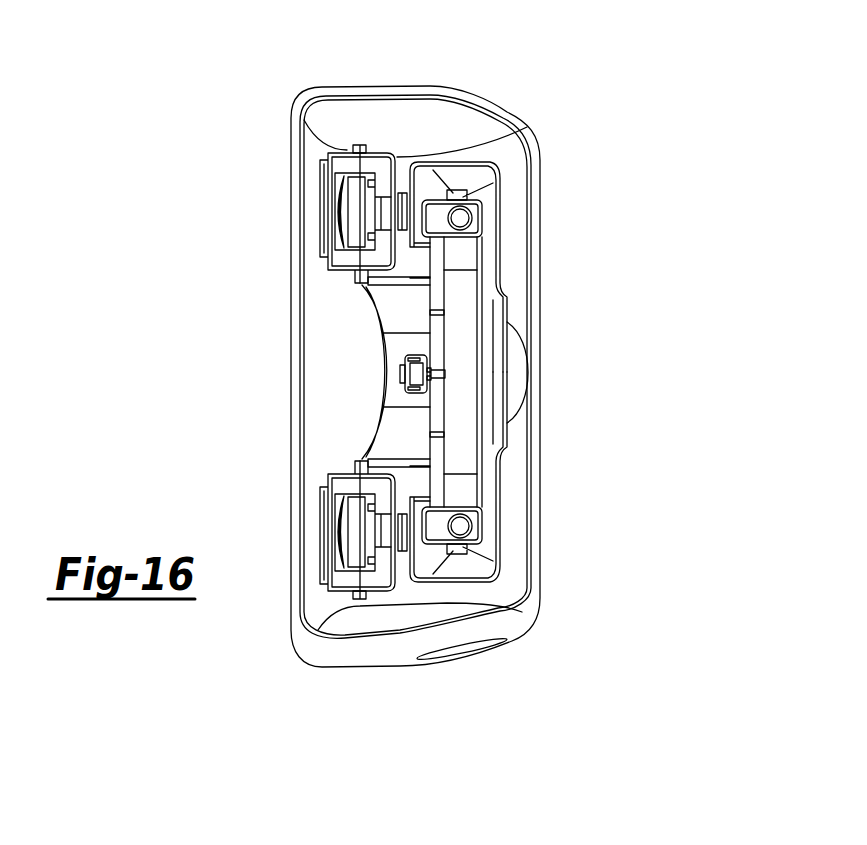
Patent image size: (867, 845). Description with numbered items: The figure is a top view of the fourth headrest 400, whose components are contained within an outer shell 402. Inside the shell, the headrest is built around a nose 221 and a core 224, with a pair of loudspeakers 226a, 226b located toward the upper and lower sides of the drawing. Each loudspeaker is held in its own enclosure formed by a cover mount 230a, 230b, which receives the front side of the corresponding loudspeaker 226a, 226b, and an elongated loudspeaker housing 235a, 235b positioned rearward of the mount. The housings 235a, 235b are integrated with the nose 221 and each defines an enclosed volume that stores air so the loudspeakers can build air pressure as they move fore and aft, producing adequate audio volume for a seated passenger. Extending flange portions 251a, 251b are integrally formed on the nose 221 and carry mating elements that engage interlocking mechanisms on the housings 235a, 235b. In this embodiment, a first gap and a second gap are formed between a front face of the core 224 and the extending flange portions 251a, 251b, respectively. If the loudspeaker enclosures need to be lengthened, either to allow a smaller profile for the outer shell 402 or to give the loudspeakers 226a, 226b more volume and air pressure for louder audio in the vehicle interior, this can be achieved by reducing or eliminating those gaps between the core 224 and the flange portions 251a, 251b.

The fourth headrest 400 is at (586, 108).
The outer shell 402 is at (481, 97).
The nose 221 is at (395, 307).
The core 224 is at (435, 533).
The loudspeaker 226a is at (342, 208).
The loudspeaker 226b is at (343, 530).
The cover mount 230a is at (347, 150).
The cover mount 230b is at (347, 600).
The loudspeaker housing 235a is at (374, 152).
The loudspeaker housing 235b is at (375, 592).
The extending flange portion 251a is at (403, 178).
The extending flange portion 251b is at (403, 572).